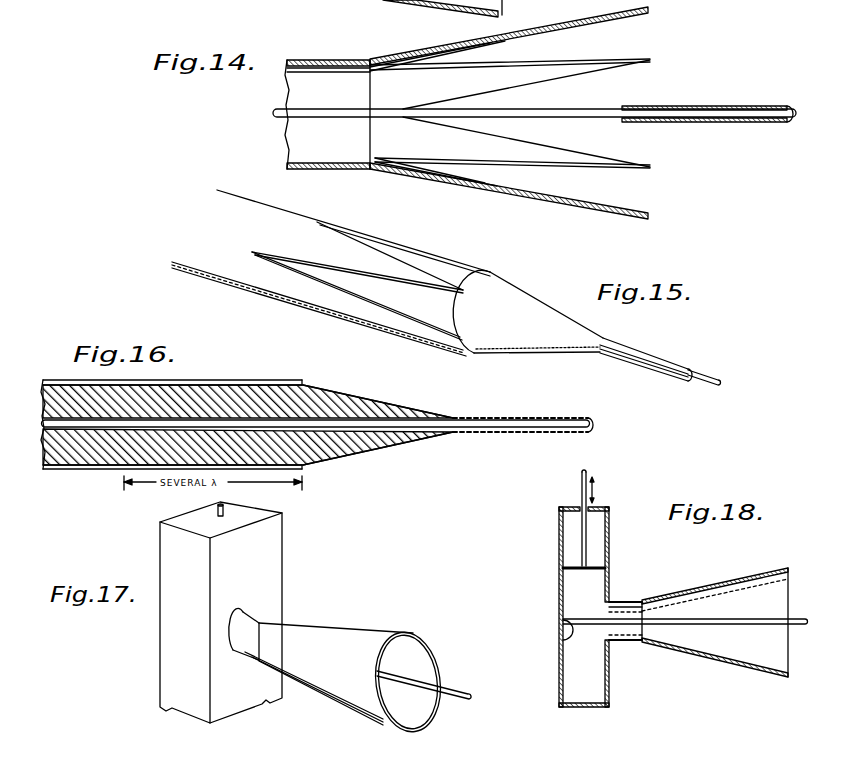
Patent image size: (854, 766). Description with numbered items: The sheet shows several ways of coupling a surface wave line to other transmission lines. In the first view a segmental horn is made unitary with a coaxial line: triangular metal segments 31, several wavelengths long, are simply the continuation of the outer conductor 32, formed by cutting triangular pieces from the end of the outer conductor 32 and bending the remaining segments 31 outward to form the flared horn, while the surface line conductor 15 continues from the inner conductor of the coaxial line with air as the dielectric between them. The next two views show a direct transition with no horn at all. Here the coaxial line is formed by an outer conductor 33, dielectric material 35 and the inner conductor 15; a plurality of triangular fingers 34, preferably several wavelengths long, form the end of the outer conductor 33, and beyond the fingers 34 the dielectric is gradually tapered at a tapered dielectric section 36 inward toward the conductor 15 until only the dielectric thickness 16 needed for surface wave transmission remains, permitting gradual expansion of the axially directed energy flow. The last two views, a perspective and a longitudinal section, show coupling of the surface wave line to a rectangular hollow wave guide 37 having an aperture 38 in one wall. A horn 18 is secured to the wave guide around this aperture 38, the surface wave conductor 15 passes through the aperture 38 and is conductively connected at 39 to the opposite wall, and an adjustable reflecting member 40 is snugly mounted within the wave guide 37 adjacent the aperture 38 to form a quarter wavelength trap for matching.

In FIG. 14, the surface line conductor 15 is at (592, 108).
In FIG. 15, the surface line conductor 15 is at (704, 373).
In FIG. 16, the surface line conductor 15 is at (542, 428).
In FIG. 17, the surface line conductor 15 is at (447, 694).
In FIG. 18, the surface line conductor 15 is at (733, 623).
In FIG. 14, the dielectric thickness 16 is at (674, 106).
In FIG. 15, the dielectric thickness 16 is at (675, 364).
In FIG. 16, the dielectric thickness 16 is at (490, 434).
In FIG. 17, the horn 18 is at (368, 636).
In FIG. 18, the horn 18 is at (697, 588).
In FIG. 14, the triangular metal segments 31 is at (617, 21).
In FIG. 14, the outer conductor 32 is at (340, 61).
In FIG. 15, the outer conductor 33 is at (222, 268).
In FIG. 16, the outer conductor 33 is at (84, 470).
In FIG. 15, the fingers 34 is at (420, 273).
In FIG. 16, the fingers 34 is at (266, 383).
In FIG. 15, the dielectric material 35 is at (390, 249).
In FIG. 16, the dielectric material 35 is at (192, 394).
In FIG. 15, the tapered dielectric section 36 is at (568, 342).
In FIG. 16, the tapered dielectric section 36 is at (383, 408).
In FIG. 17, the hollow wave guide 37 is at (170, 672).
In FIG. 18, the hollow wave guide 37 is at (561, 597).
In FIG. 17, the aperture 38 is at (237, 657).
In FIG. 18, the aperture 38 is at (611, 641).
In FIG. 18, the conductive connection 39 is at (562, 640).
In FIG. 18, the adjustable reflecting member 40 is at (570, 566).